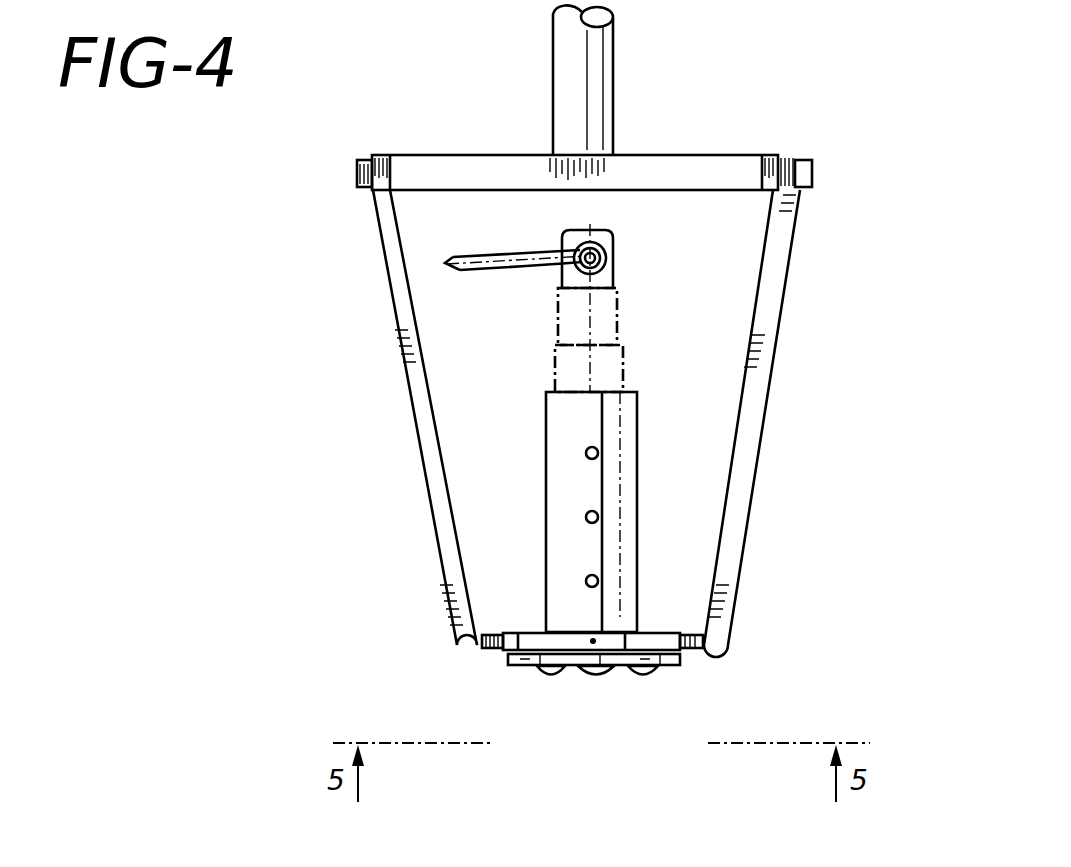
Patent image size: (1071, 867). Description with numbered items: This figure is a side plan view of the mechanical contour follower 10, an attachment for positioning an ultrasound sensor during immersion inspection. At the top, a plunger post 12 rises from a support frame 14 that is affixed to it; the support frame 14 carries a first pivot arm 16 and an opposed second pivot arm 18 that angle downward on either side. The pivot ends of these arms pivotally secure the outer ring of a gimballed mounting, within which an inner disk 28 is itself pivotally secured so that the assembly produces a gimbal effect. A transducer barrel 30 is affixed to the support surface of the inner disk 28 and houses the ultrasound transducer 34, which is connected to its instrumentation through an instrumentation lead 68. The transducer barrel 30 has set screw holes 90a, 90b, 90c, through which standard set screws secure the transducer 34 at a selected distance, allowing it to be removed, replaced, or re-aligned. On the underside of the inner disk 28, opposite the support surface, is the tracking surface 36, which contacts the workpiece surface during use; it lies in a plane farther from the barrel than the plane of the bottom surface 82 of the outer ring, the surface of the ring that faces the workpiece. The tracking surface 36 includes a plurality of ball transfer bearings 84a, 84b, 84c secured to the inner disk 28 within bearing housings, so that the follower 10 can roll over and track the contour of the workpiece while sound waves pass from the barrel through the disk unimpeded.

The mechanical contour follower 10 is at (208, 354).
The plunger post 12 is at (578, 63).
The support frame 14 is at (710, 168).
The first pivot arm 16 is at (388, 228).
The second pivot arm 18 is at (768, 284).
The inner disk 28 is at (512, 665).
The transducer barrel 30 is at (638, 415).
The ultrasound transducer 34 is at (600, 365).
The tracking surface 36 is at (623, 678).
The instrumentation lead 68 is at (517, 262).
The bottom surface 82 is at (686, 648).
The ball transfer bearing 84a is at (549, 678).
The ball transfer bearing 84b is at (594, 678).
The ball transfer bearing 84c is at (645, 678).
The set screw hole 90a is at (582, 451).
The set screw hole 90b is at (583, 516).
The set screw hole 90c is at (583, 580).